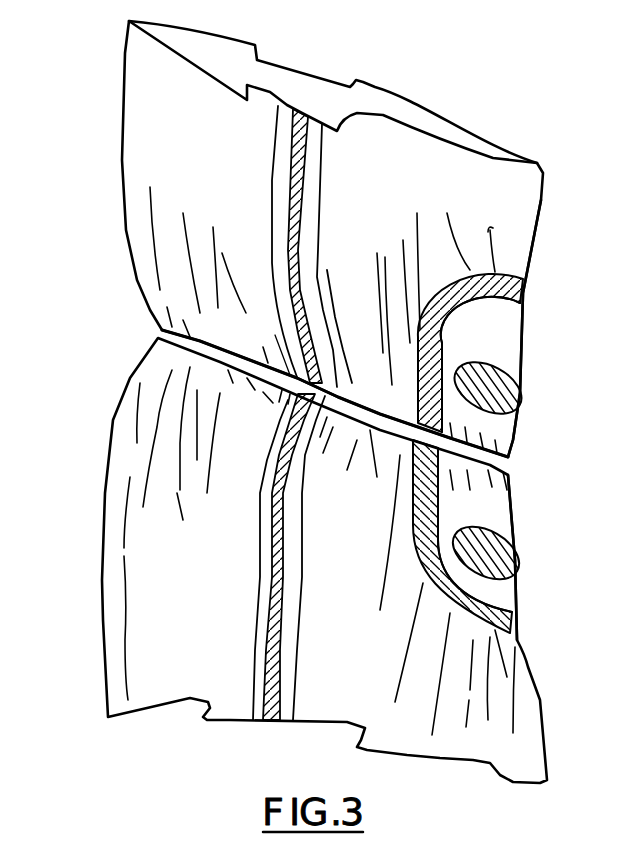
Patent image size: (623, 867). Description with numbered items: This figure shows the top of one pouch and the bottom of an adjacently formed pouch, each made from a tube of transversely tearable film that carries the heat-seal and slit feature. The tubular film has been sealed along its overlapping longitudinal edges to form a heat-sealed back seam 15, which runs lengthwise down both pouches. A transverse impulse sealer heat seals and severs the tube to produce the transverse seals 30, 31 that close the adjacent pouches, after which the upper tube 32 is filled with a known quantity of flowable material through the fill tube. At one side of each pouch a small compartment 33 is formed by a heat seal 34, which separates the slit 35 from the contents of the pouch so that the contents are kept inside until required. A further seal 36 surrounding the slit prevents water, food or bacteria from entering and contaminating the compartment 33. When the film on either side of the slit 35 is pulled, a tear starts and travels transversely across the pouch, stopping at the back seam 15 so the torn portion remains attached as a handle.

The back seam 15 is at (297, 170).
The transverse seal 30 is at (155, 339).
The transverse seal 31 is at (160, 328).
The upper tube 32 is at (124, 54).
The small compartment 33 is at (495, 443).
The heat seal 34 is at (519, 313).
The slit 35 is at (519, 396).
The seal surrounding the slit 36 is at (500, 370).